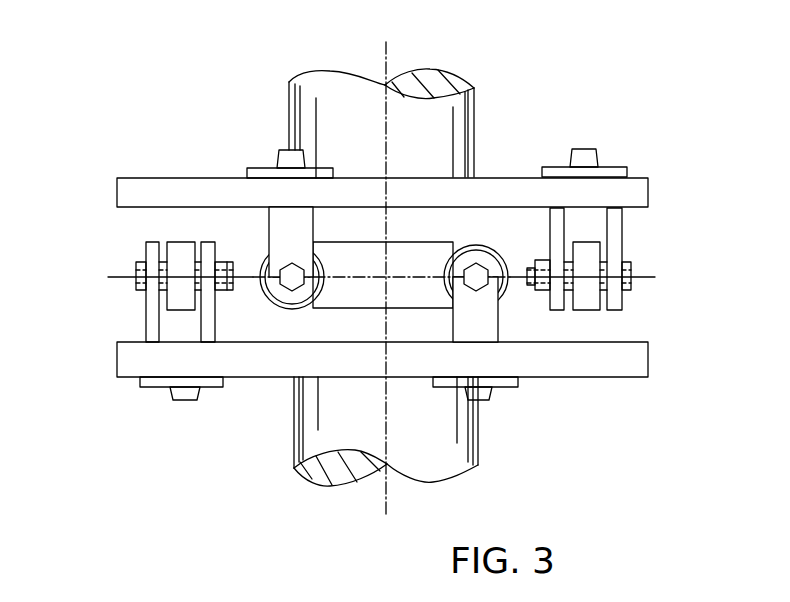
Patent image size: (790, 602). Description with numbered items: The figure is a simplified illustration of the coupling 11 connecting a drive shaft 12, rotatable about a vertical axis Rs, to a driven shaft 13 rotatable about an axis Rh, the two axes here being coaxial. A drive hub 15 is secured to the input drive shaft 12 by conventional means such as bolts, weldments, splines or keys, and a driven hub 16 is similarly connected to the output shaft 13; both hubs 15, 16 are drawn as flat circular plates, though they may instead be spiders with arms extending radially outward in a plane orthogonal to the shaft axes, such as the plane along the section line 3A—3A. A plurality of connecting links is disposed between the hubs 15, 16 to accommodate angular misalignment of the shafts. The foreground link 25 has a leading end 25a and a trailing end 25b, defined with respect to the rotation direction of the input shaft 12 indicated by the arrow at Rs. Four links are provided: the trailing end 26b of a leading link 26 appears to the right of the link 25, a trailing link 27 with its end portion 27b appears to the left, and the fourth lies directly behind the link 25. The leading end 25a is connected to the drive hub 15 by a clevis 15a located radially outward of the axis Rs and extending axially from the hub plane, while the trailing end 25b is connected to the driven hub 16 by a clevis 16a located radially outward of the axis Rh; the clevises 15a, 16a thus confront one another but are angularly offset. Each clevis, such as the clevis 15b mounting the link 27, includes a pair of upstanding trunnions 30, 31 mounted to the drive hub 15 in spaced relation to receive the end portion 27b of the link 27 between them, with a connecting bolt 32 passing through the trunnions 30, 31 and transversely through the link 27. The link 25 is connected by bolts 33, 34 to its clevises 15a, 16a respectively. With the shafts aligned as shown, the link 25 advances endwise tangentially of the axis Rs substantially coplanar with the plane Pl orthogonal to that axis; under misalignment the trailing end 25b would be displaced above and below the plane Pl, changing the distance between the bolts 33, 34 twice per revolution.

The coupling 11 is at (103, 294).
The drive shaft 12 is at (452, 455).
The driven shaft 13 is at (458, 132).
The drive hub 15 is at (281, 377).
The drive hub clevis 15a is at (482, 325).
The clevis 15b is at (136, 355).
The driven hub 16 is at (235, 178).
The driven hub clevis 16a is at (287, 235).
The link 25 is at (403, 256).
The leading end portion of link 25a is at (498, 252).
The trailing end portion of link 25b is at (268, 262).
The leading link 26 is at (592, 248).
The trailing end of leading link 26b is at (583, 296).
The trailing link 27 is at (175, 258).
The lower portion of left block 27b is at (182, 308).
The trunnion 30 is at (147, 333).
The trunnion 31 is at (212, 333).
The connecting bolt 32 is at (136, 265).
The bolt 33 is at (474, 262).
The bolt 34 is at (296, 265).
The section line 3A is at (255, 285).
The rotational axis of driven shaft Rh is at (388, 45).
The rotational axis of drive shaft Rs is at (435, 453).
The plane Pl is at (655, 277).